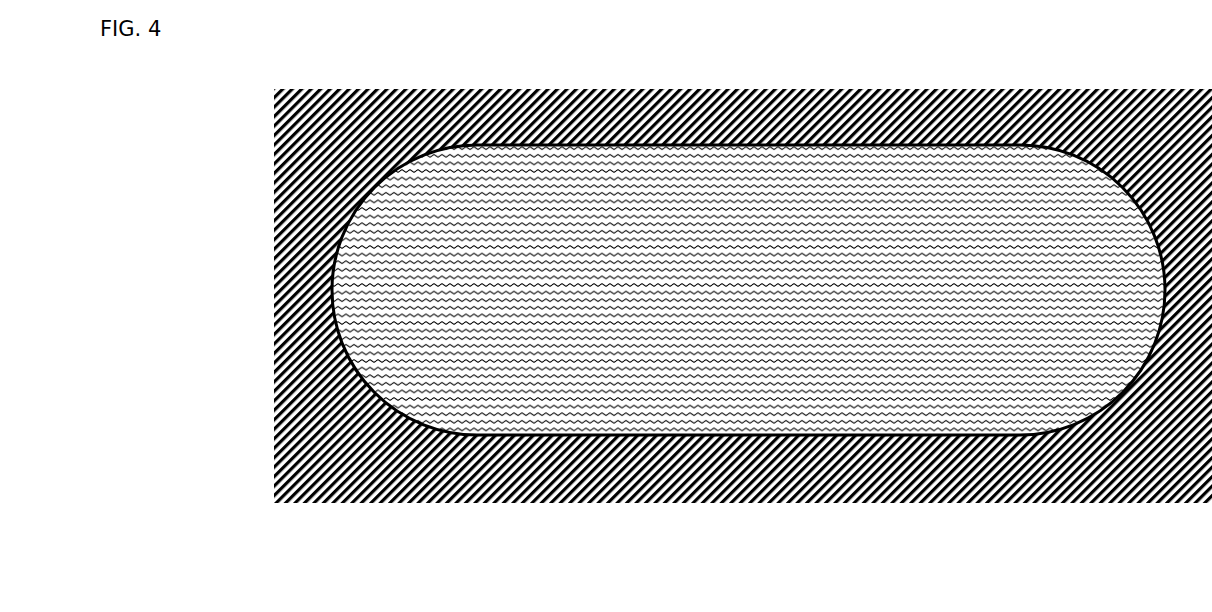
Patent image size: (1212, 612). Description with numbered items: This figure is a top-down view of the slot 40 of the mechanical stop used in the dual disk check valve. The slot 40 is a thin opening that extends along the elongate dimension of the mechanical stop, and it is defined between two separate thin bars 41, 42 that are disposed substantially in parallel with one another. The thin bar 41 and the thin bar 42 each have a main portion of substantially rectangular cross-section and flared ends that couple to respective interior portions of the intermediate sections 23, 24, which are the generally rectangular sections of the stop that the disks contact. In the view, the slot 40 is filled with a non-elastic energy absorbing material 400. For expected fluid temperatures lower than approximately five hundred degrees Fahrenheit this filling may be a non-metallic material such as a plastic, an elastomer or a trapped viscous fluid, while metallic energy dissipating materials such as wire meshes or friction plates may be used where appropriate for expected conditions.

The intermediate section 23 is at (325, 170).
The intermediate section 24 is at (1180, 398).
The thin bar 41 is at (776, 126).
The thin bar 42 is at (776, 484).
The non-elastic energy absorbing material 400 is at (975, 328).
The slot 40 is at (964, 435).